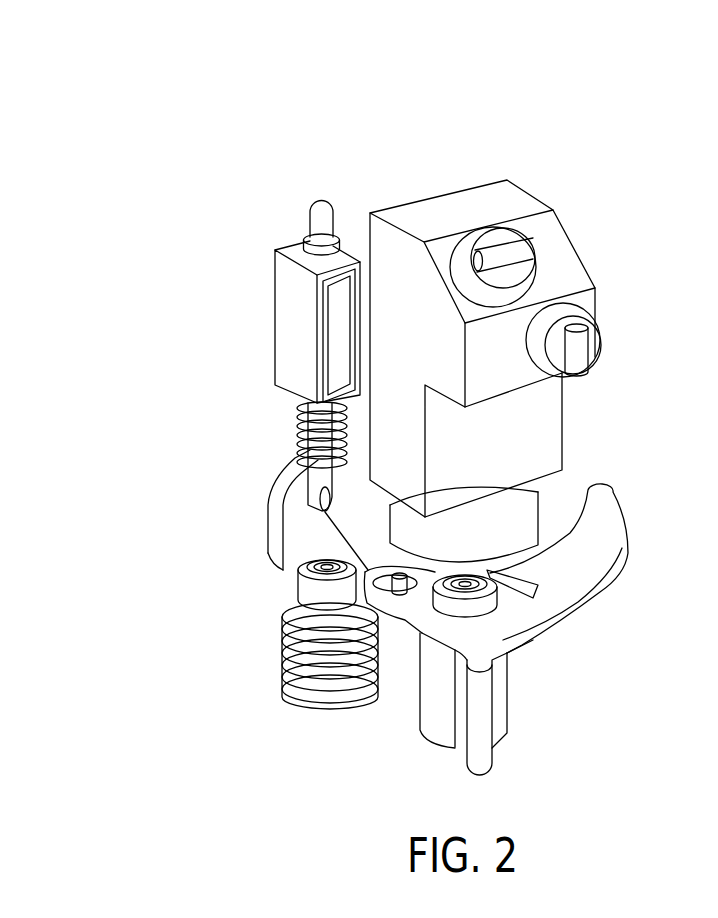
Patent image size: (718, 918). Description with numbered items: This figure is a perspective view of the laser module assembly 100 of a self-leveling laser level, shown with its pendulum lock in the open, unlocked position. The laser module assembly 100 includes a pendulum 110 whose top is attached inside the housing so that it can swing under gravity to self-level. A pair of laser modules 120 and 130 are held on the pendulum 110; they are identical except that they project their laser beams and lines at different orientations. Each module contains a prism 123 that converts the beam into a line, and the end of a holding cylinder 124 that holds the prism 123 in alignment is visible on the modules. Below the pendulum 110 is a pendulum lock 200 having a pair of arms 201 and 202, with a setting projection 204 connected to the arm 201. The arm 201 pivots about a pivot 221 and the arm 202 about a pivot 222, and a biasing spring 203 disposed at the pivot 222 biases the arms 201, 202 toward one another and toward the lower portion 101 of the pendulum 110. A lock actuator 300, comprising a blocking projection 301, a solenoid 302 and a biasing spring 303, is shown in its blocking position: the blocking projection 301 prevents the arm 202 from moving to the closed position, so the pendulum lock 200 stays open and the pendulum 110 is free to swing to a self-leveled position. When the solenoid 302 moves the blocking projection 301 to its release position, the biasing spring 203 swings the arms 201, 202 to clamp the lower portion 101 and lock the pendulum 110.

The laser module assembly 100 is at (211, 114).
The pendulum 110 is at (598, 142).
The laser module 120 is at (640, 352).
The prism 123 is at (507, 248).
The holding cylinder 124 is at (577, 258).
The laser module 130 is at (543, 238).
The lower portion 101 is at (527, 515).
The lock actuator 300 is at (146, 274).
The solenoid 302 is at (288, 317).
The biasing spring 303 is at (298, 421).
The blocking projection 301 is at (330, 500).
The pendulum lock 200 is at (188, 663).
The arm 201 is at (607, 580).
The arm 202 is at (283, 538).
The biasing spring 203 is at (332, 708).
The setting projection 204 is at (478, 760).
The pivot 221 is at (488, 582).
The pivot 222 is at (298, 577).